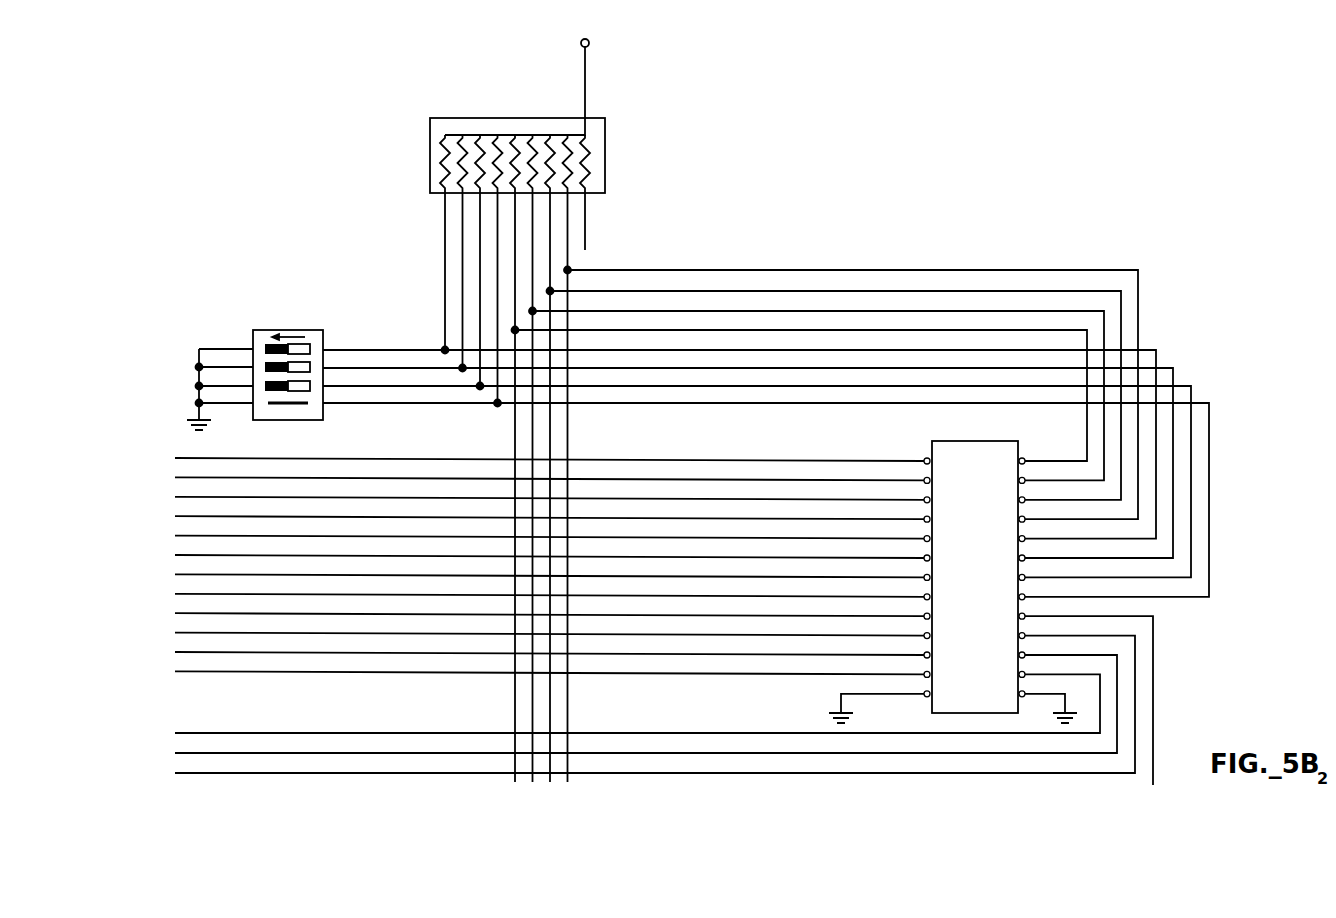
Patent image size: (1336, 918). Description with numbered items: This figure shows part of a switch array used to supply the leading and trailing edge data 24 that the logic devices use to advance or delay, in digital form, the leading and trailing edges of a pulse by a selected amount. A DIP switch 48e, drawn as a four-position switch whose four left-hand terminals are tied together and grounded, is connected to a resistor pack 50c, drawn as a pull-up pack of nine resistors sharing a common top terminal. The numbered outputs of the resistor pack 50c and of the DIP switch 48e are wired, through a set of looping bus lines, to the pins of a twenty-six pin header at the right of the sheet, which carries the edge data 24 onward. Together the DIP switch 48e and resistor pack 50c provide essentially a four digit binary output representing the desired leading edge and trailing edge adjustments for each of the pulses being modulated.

The leading and trailing edge data switches 24 is at (992, 153).
The DIP switch 48e is at (254, 330).
The resistor pack 50c is at (556, 118).